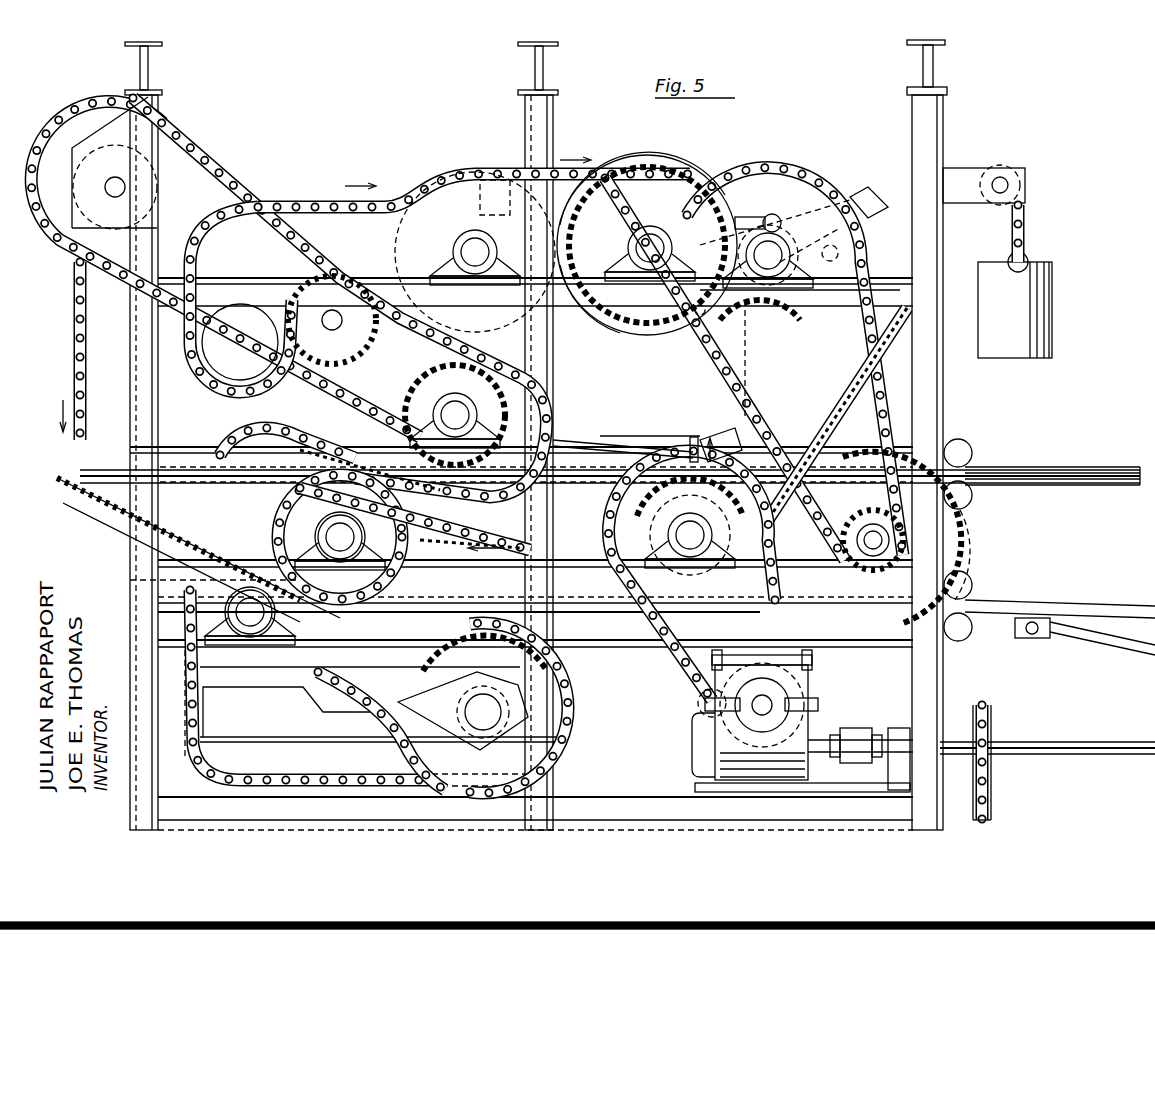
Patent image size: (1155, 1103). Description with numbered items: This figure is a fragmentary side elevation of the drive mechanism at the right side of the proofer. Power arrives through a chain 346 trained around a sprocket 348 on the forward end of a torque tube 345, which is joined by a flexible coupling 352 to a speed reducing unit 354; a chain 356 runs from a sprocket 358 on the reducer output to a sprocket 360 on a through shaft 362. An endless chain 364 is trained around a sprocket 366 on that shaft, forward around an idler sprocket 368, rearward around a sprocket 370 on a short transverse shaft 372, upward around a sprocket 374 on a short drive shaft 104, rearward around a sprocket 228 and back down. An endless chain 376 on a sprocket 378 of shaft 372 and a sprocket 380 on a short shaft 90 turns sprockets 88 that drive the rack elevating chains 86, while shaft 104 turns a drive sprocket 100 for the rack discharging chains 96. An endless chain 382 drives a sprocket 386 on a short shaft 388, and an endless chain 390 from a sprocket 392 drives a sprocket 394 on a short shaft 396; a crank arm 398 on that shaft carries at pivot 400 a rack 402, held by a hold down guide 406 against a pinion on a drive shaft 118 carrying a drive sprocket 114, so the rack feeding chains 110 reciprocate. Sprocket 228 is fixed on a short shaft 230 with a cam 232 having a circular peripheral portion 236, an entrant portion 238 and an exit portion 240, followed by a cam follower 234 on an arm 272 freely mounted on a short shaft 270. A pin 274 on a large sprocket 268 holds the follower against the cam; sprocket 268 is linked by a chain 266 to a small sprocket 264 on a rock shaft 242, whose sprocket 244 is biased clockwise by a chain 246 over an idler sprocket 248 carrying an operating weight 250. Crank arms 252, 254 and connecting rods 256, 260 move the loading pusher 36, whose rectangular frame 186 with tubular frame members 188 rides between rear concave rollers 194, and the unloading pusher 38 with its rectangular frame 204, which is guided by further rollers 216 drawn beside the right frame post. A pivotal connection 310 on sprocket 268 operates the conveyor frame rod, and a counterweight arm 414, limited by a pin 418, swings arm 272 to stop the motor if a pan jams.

The loading pusher 36 is at (640, 443).
The unloading pusher 38 is at (1056, 591).
The endless chains 86 is at (73, 345).
The sprockets 88 is at (65, 255).
The short transverse shafts 90 is at (120, 180).
The endless chains 96 is at (310, 200).
The drive sprocket 100 is at (420, 205).
The short transverse drive shaft 104 is at (473, 248).
The endless chains 110 is at (345, 787).
The drive sprocket 114 is at (190, 668).
The short transverse drive shaft 118 is at (245, 610).
The rectangular frame 186 is at (998, 466).
The tubular frame members 188 is at (1050, 466).
The rear concave rollers 194 is at (968, 443).
The rectangular frame 204 is at (1092, 604).
The rollers 216 is at (970, 598).
The sprocket 228 is at (635, 338).
The short transverse shaft 230 is at (648, 240).
The cam 232 is at (676, 175).
The cam follower 234 is at (722, 323).
The circular peripheral portion 236 is at (592, 320).
The perimetrical entrant portion 238 is at (716, 205).
The perimetrical exit portion 240 is at (700, 195).
The rock shaft 242 is at (880, 545).
The sprocket 244 is at (980, 553).
The chain 246 is at (898, 332).
The idler sprocket 248 is at (1005, 190).
The operating weight 250 is at (1038, 281).
The crank arm 252 is at (718, 440).
The crank arm 254 is at (1037, 635).
The connecting rod 256 is at (572, 440).
The connecting rod 260 is at (1138, 640).
The small sprocket 264 is at (860, 520).
The chain 266 is at (895, 408).
The large sprocket 268 is at (785, 190).
The short transverse shaft 270 is at (800, 297).
The arm 272 is at (790, 335).
The pin 274 is at (746, 352).
The pivotal connection 310 is at (777, 220).
The torque tube 345 is at (1063, 742).
The chain 346 is at (992, 812).
The sprocket 348 is at (990, 735).
The flexible coupling 352 is at (852, 735).
The speed reducing unit 354 is at (692, 746).
The chain 356 is at (676, 668).
The sprocket 358 is at (712, 700).
The sprocket 360 is at (672, 590).
The through shaft 362 is at (712, 560).
The endless chain 364 is at (505, 535).
The sprocket 366 is at (620, 535).
The idler sprocket 368 is at (288, 440).
The sprocket 370 is at (518, 408).
The short transverse shaft 372 is at (350, 340).
The sprocket 374 is at (497, 196).
The endless chain 376 is at (238, 198).
The sprocket 378 is at (445, 410).
The sprocket 380 is at (180, 168).
The endless chain 382 is at (372, 450).
The sprocket 386 is at (290, 513).
The short shaft 388 is at (335, 537).
The endless chain 390 is at (562, 678).
The sprocket 392 is at (420, 547).
The sprocket 394 is at (500, 640).
The short shaft 396 is at (488, 712).
The crank arm 398 is at (450, 735).
The pivotal attachment 400 is at (445, 633).
The rack 402 is at (100, 520).
The hold down guide 406 is at (160, 580).
The counterweight arm 414 is at (862, 188).
The pin 418 is at (838, 250).